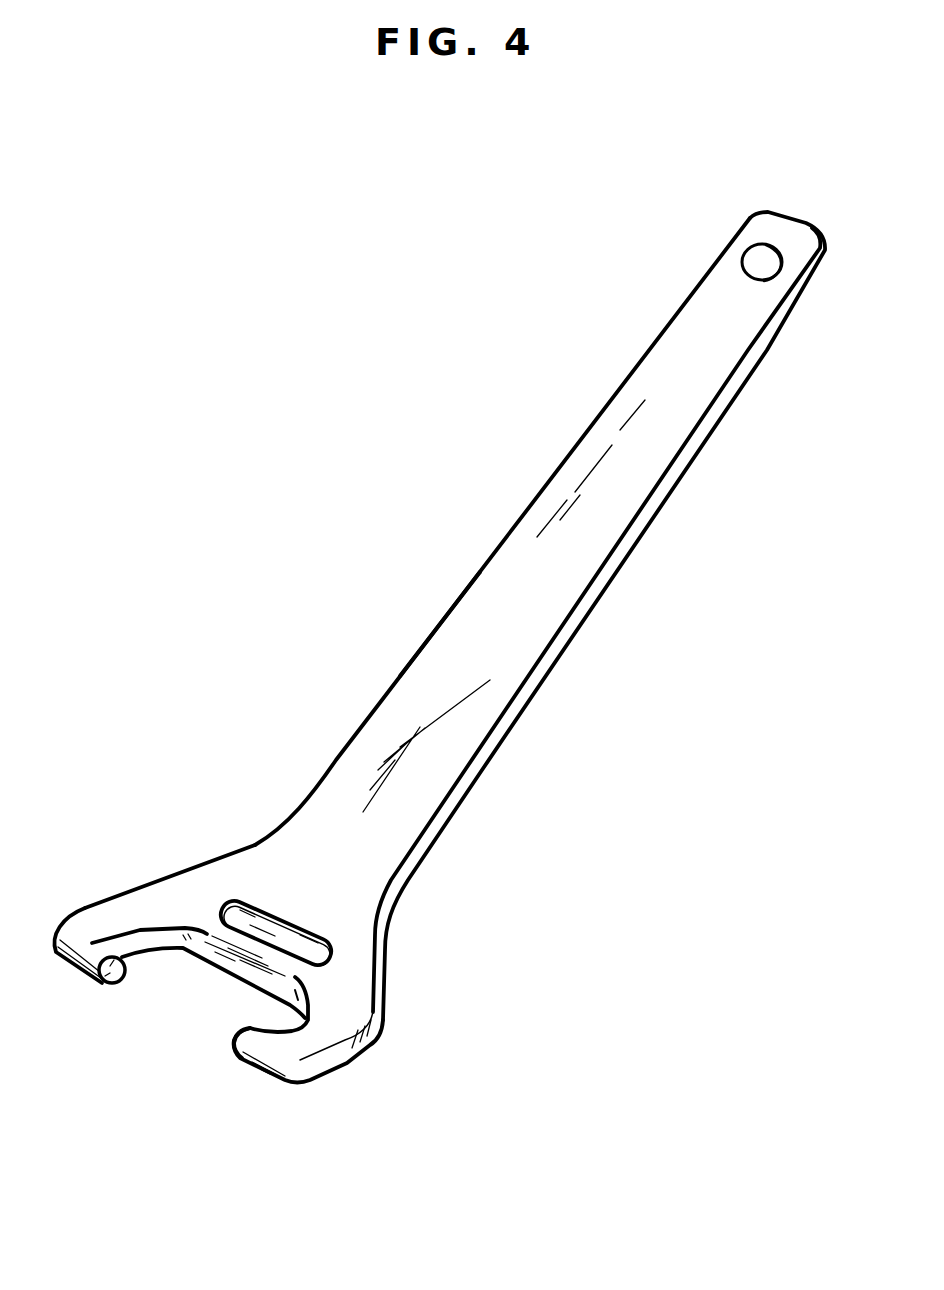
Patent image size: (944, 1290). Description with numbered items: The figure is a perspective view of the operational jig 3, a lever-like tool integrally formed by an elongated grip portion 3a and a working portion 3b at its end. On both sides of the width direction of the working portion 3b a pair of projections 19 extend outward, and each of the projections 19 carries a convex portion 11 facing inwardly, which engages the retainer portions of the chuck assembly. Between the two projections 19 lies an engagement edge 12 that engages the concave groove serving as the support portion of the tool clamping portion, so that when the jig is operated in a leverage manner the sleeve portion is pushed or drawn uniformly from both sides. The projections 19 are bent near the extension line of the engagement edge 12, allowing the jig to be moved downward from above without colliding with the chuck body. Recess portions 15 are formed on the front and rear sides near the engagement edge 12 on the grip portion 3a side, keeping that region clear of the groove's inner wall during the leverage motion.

The operational jig 3 is at (485, 570).
The grip portion 3a is at (398, 648).
The working portion 3b is at (138, 880).
The convex portion 11 is at (104, 988).
The engagement edge 12 is at (223, 965).
The recess portion 15 is at (243, 898).
The projections 19 is at (92, 908).